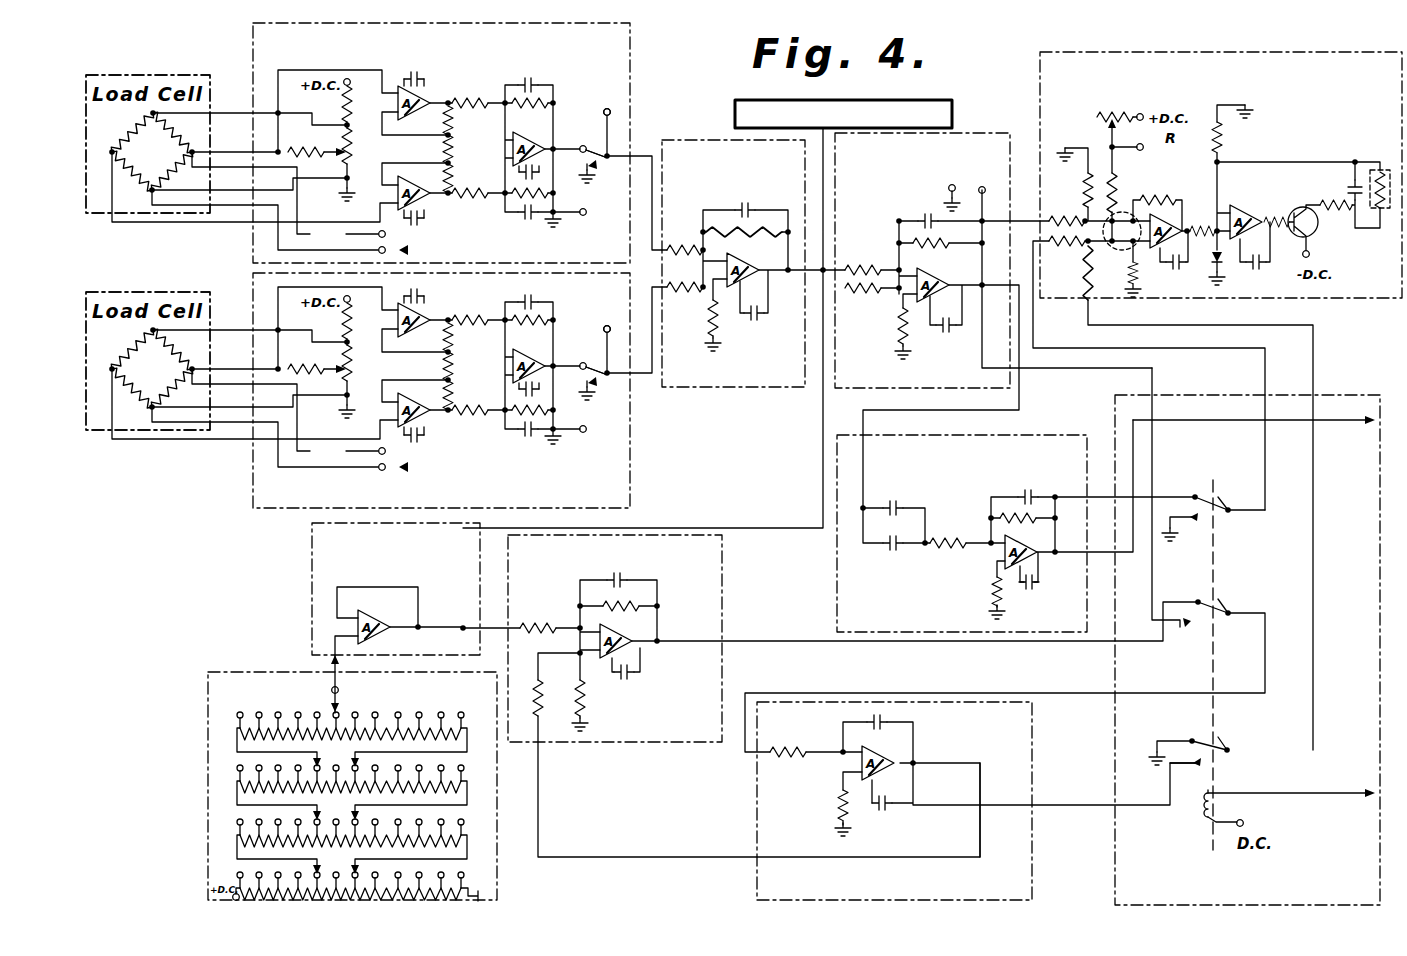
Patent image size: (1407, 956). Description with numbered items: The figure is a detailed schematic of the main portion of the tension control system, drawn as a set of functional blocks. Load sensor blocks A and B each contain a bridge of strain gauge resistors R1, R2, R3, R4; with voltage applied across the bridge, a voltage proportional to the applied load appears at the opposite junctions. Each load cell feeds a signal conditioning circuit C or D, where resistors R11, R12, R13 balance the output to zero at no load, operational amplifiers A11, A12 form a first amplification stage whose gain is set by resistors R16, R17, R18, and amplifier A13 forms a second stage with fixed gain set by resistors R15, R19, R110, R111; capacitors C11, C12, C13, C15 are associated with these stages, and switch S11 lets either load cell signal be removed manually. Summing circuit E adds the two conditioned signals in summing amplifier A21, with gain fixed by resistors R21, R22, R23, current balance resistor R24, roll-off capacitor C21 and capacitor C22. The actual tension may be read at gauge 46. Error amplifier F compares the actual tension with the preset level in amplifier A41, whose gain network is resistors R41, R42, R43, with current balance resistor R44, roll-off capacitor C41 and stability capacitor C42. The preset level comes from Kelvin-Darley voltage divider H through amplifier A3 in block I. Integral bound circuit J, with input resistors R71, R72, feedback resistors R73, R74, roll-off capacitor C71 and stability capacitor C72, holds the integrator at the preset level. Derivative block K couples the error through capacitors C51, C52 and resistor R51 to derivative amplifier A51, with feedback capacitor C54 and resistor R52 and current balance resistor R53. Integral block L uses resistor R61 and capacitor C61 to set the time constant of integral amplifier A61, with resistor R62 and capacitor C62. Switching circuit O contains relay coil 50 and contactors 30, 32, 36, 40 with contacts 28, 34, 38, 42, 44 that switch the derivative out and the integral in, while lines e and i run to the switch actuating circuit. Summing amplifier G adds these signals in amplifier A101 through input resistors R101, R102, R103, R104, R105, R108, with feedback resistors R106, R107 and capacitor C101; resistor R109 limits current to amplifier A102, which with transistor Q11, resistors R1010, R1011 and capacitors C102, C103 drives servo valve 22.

The load sensor block A is at (186, 78).
The load sensor block B is at (190, 298).
The signal conditioning circuit C is at (441, 143).
The signal conditioning circuit D is at (441, 390).
The summing circuit E is at (694, 192).
The error amplifier F is at (922, 260).
The summing amplifier G is at (1221, 175).
The Kelvin-Darley voltage divider H is at (352, 786).
The preset tension level control I is at (396, 589).
The integral bound circuit J is at (726, 582).
The error derivative amplifier K is at (962, 533).
The integral amplifier L is at (894, 801).
The switching circuit O is at (1247, 650).
The error signal line e is at (1264, 424).
The relay coil line i is at (1301, 797).
The servo valve 22 is at (1362, 148).
The gauge 46 is at (955, 112).
The strain gauge resistor R1 is at (125, 132).
The strain gauge resistor R2 is at (176, 132).
The strain gauge resistor R3 is at (131, 175).
The strain gauge resistor R4 is at (174, 171).
The balance resistor R11 is at (306, 144).
The balance resistor R12 is at (364, 104).
The balance resistor R13 is at (363, 146).
The gain resistor R15 is at (470, 93).
The gain resistor R16 is at (465, 120).
The gain resistor R17 is at (466, 149).
The gain resistor R18 is at (465, 178).
The gain resistor R19 is at (470, 206).
The gain resistor R110 is at (538, 101).
The gain resistor R111 is at (537, 187).
The operational amplifier A11 is at (420, 108).
The operational amplifier A12 is at (420, 188).
The operational amplifier A13 is at (529, 141).
The capacitor C11 is at (417, 69).
The capacitor C12 is at (417, 224).
The capacitor C13 is at (529, 70).
The capacitor C15 is at (518, 225).
The switch S11 is at (608, 151).
The gain resistor R21 is at (684, 242).
The gain resistor R22 is at (684, 300).
The gain resistor R23 is at (744, 227).
The current balance resistor R24 is at (694, 327).
The capacitor C21 is at (759, 200).
The capacitor C22 is at (764, 327).
The summing amplifier A21 is at (755, 267).
The gain resistor R41 is at (863, 257).
The gain resistor R42 is at (863, 300).
The gain resistor R43 is at (945, 237).
The current balance resistor R44 is at (887, 333).
The capacitor C41 is at (916, 210).
The capacitor C42 is at (952, 337).
The error amplifier A41 is at (946, 281).
The summing resistor R101 is at (1132, 190).
The summing resistor R102 is at (1068, 190).
The summing resistor R103 is at (1064, 210).
The summing resistor R104 is at (1064, 253).
The resistor R105 is at (1068, 273).
The feedback resistor R106 is at (1121, 281).
The feedback resistor R107 is at (1164, 190).
The summing resistor R108 is at (1115, 108).
The current limiting resistor R109 is at (1200, 223).
The current limiting resistor R1010 is at (1283, 211).
The current limiting resistor R1011 is at (1336, 193).
The summing amplifier A101 is at (1173, 242).
The amplifier A102 is at (1251, 215).
The capacitor C101 is at (1173, 279).
The capacitor C102 is at (1250, 268).
The capacitor C103 is at (1366, 228).
The transistor Q11 is at (1317, 227).
The amplifier A3 is at (379, 618).
The input resistor R71 is at (539, 616).
The input resistor R72 is at (525, 698).
The feedback resistor R73 is at (640, 603).
The feedback resistor R74 is at (567, 705).
The capacitor C71 is at (633, 573).
The capacitor C72 is at (622, 683).
The coupling capacitor C51 is at (884, 497).
The coupling capacitor C52 is at (884, 557).
The feedback capacitor C54 is at (1040, 488).
The coupling resistor R51 is at (952, 531).
The feedback resistor R52 is at (1023, 528).
The current balance resistor R53 is at (971, 598).
The derivative amplifier A51 is at (1042, 569).
The input resistor R61 is at (790, 740).
The current balance resistor R62 is at (822, 813).
The feedback capacitor C61 is at (891, 714).
The capacitor C62 is at (883, 822).
The integral amplifier A61 is at (880, 760).
The relay contact 28 is at (1198, 590).
The relay contactor 30 is at (1198, 493).
The relay contactor 32 is at (1241, 494).
The ground contact 34 is at (1176, 513).
The relay contactor 36 is at (1232, 598).
The error amplifier contact 38 is at (1180, 627).
The relay contactor 40 is at (1224, 736).
The ground contact 42 is at (1155, 742).
The integral amplifier contact 44 is at (1188, 777).
The relay coil 50 is at (1220, 810).